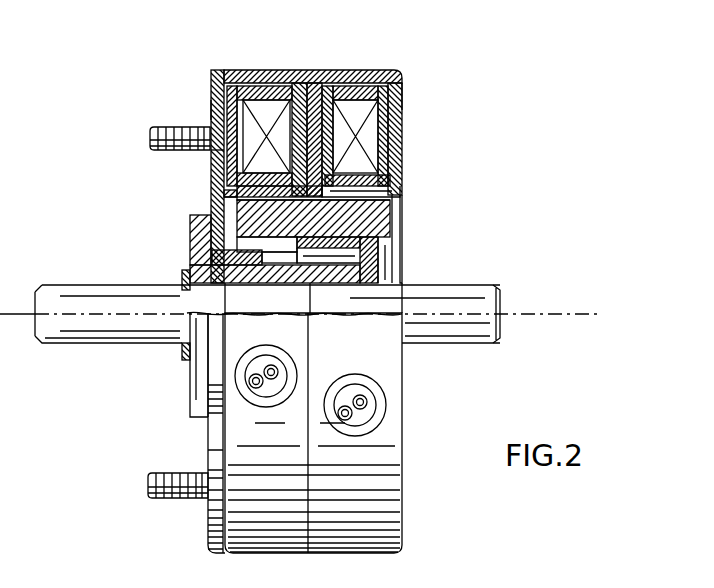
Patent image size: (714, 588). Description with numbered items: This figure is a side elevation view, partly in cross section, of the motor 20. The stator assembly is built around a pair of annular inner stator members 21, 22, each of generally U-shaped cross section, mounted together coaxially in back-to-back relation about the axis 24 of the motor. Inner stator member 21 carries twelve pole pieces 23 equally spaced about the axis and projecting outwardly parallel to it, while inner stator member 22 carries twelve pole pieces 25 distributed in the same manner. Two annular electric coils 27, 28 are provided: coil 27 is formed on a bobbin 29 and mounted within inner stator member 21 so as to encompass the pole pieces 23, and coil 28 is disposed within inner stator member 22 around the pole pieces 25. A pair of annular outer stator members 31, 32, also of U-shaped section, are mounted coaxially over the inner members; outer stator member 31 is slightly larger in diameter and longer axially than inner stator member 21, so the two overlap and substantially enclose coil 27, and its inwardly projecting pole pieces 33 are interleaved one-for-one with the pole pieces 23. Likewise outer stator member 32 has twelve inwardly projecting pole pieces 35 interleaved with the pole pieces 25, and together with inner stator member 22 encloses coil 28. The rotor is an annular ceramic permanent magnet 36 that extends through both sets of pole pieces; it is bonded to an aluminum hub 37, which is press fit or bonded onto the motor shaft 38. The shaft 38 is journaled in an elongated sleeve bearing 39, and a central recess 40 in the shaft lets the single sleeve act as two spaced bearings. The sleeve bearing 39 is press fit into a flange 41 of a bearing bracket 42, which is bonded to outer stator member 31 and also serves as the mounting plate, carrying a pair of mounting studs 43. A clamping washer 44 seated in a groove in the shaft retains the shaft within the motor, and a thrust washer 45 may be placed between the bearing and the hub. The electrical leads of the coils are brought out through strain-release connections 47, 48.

The motor 20 is at (522, 182).
The inner stator member 21 is at (281, 73).
The inner stator member 22 is at (357, 83).
The pole pieces 23 is at (240, 193).
The axis 24 is at (566, 314).
The pole pieces 25 is at (396, 196).
The electric coil 27 is at (264, 112).
The electric coil 28 is at (372, 135).
The bobbin 29 is at (211, 158).
The outer stator member 31 is at (237, 70).
The outer stator member 32 is at (401, 97).
The pole pieces 33 is at (226, 200).
The pole pieces 35 is at (380, 192).
The permanent magnet 36 is at (385, 230).
The hub 37 is at (377, 268).
The motor shaft 38 is at (467, 330).
The sleeve bearing 39 is at (190, 257).
The central recess 40 is at (184, 344).
The flange 41 is at (245, 250).
The bearing bracket 42 is at (212, 107).
The mounting studs 43 is at (150, 136).
The clamping washer 44 is at (186, 360).
The thrust washer 45 is at (366, 283).
The strain-release connection 47 is at (250, 393).
The strain-release connection 48 is at (384, 413).